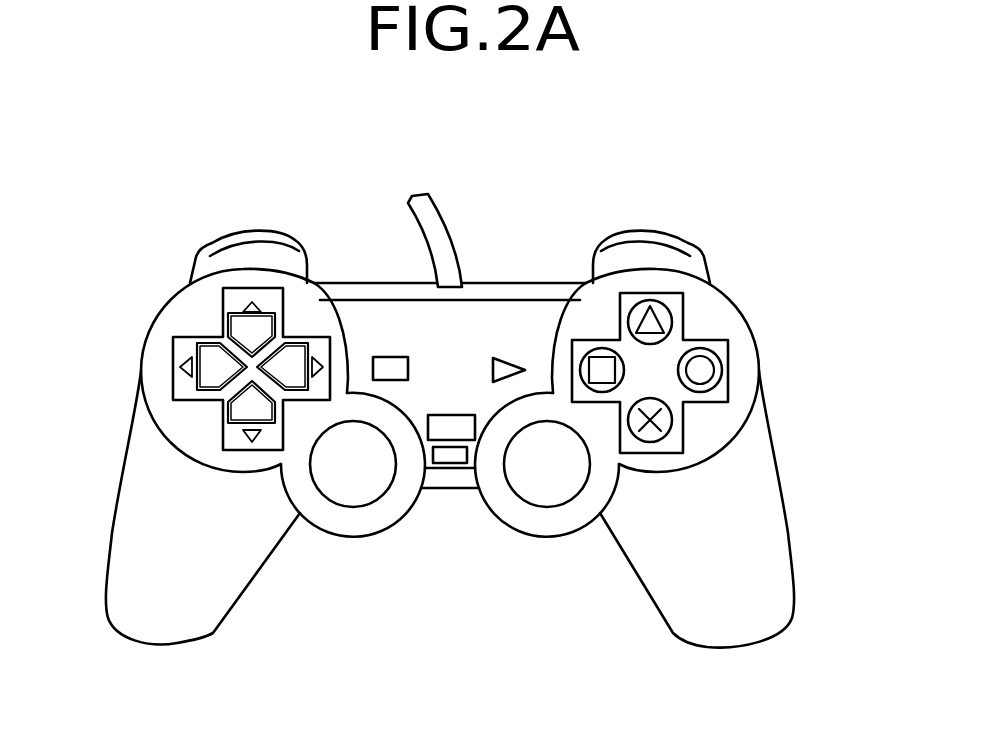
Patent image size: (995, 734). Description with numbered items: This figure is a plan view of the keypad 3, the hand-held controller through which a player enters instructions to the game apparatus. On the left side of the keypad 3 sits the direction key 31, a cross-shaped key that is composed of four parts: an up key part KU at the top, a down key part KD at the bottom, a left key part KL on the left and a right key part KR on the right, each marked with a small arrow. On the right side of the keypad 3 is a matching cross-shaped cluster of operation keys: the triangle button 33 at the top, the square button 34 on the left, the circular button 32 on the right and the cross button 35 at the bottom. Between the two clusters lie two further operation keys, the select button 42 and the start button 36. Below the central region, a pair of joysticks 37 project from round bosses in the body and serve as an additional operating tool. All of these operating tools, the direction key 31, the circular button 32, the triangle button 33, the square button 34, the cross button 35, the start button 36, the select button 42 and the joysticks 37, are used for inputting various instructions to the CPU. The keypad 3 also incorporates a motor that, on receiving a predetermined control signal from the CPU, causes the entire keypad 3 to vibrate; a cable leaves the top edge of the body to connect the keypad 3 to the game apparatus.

The keypad 3 is at (768, 257).
The direction key 31 is at (198, 320).
The up key part KU is at (262, 330).
The down key part KD is at (247, 408).
The left key part KL is at (207, 362).
The right key part KR is at (293, 375).
The select button 42 is at (389, 362).
The start button 36 is at (498, 363).
The triangle button 33 is at (663, 308).
The square button 34 is at (603, 350).
The circular button 32 is at (703, 372).
The cross button 35 is at (665, 422).
The joysticks 37 is at (530, 473).